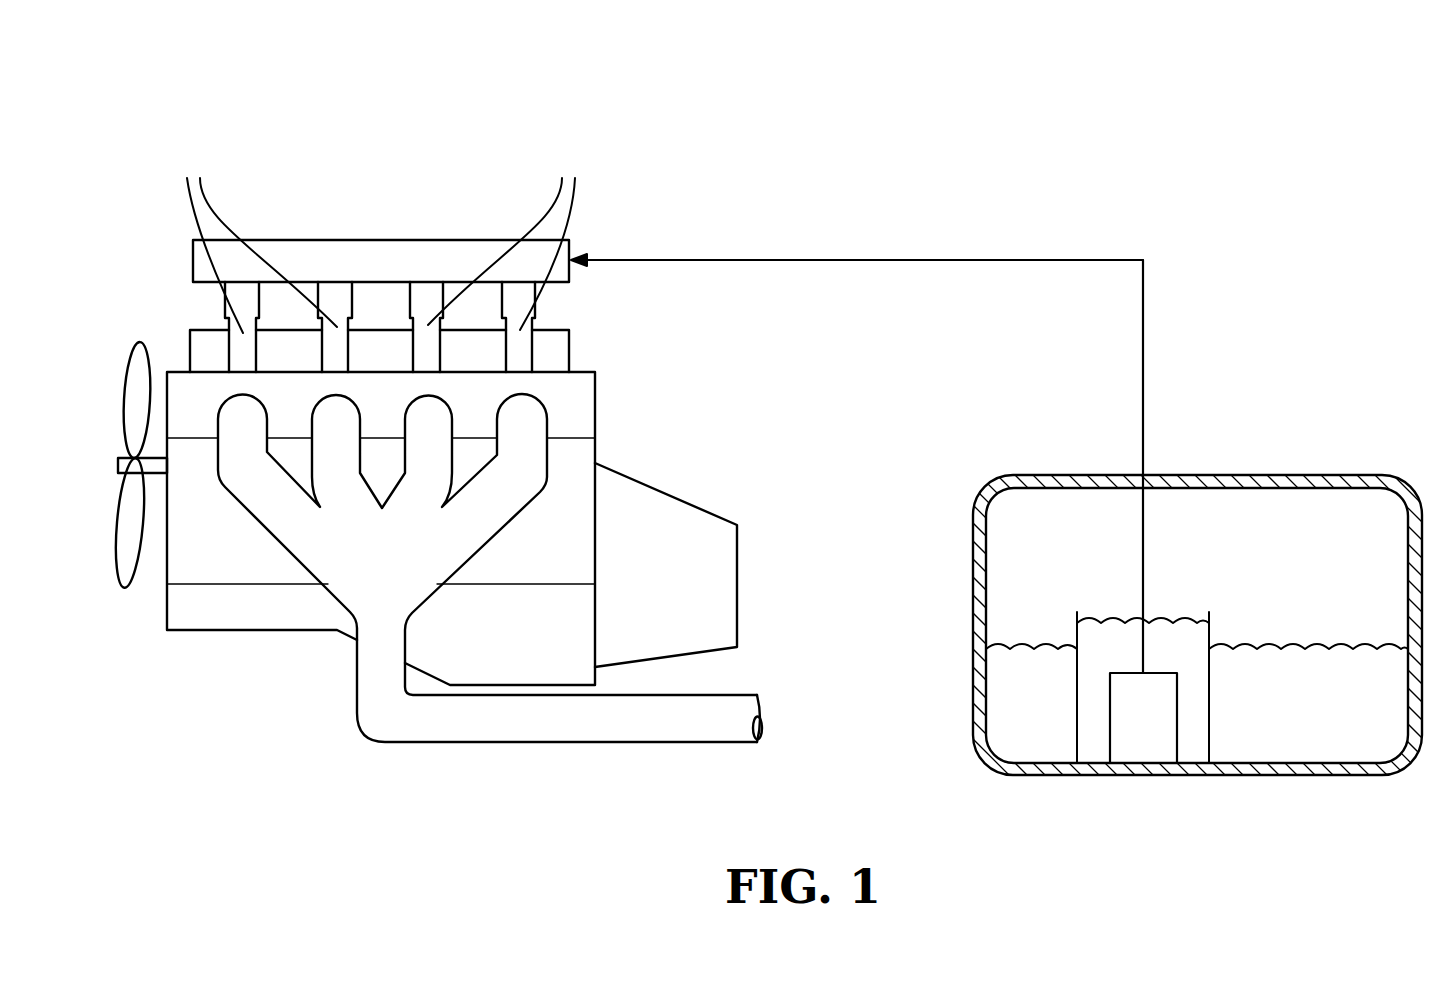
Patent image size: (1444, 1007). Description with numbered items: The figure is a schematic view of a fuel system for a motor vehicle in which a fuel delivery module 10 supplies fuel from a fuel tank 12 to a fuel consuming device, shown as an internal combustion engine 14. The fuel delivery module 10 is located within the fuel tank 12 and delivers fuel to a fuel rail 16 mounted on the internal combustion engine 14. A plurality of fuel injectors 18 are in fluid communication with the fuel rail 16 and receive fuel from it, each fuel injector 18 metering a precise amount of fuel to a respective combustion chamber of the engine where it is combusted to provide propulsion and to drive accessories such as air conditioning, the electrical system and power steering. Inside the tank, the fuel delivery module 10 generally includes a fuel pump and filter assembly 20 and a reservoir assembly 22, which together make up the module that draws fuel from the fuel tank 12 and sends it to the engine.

The fuel delivery module 10 is at (1050, 736).
The fuel tank 12 is at (1023, 480).
The internal combustion engine 14 is at (180, 568).
The fuel rail 16 is at (305, 245).
The fuel injectors 18 is at (380, 240).
The fuel pump and filter assembly 20 is at (1178, 740).
The reservoir assembly 22 is at (1211, 705).